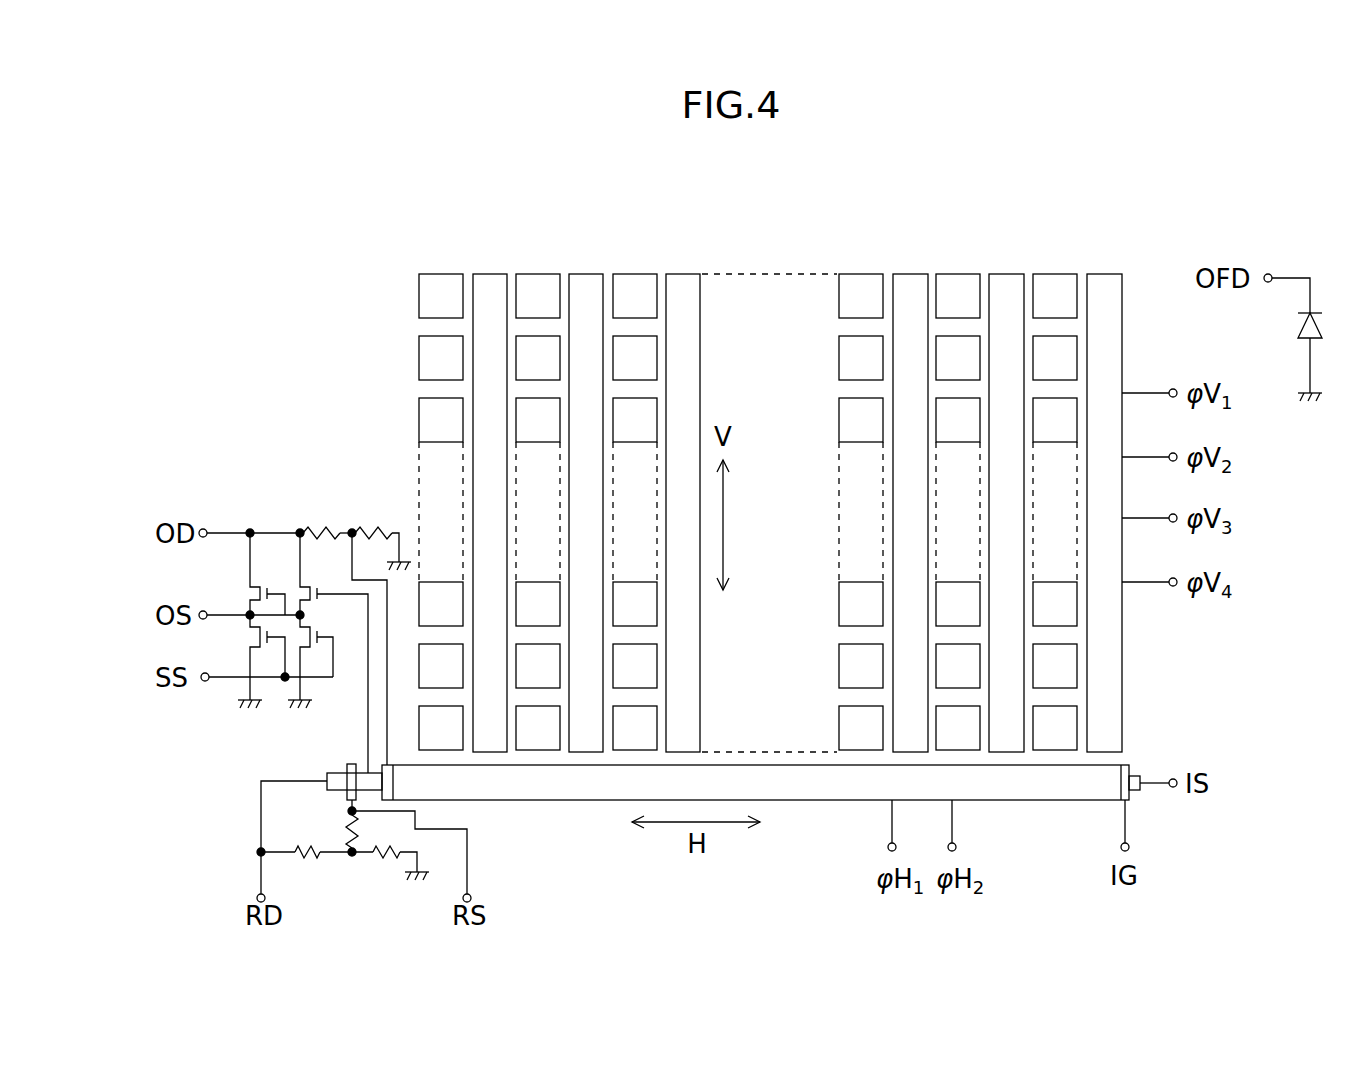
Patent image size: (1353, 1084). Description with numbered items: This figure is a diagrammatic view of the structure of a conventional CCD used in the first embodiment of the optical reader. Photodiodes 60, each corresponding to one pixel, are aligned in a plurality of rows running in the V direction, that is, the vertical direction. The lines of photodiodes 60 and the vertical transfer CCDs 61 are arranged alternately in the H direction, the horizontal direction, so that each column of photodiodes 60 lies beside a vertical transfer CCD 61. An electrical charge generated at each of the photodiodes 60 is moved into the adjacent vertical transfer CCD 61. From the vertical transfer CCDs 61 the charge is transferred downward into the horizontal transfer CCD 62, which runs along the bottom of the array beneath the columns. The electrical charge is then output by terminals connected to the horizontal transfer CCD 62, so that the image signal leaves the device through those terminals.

The photodiodes 60 is at (828, 276).
The vertical transfer CCD 61 is at (490, 288).
The horizontal transfer CCD 62 is at (820, 800).